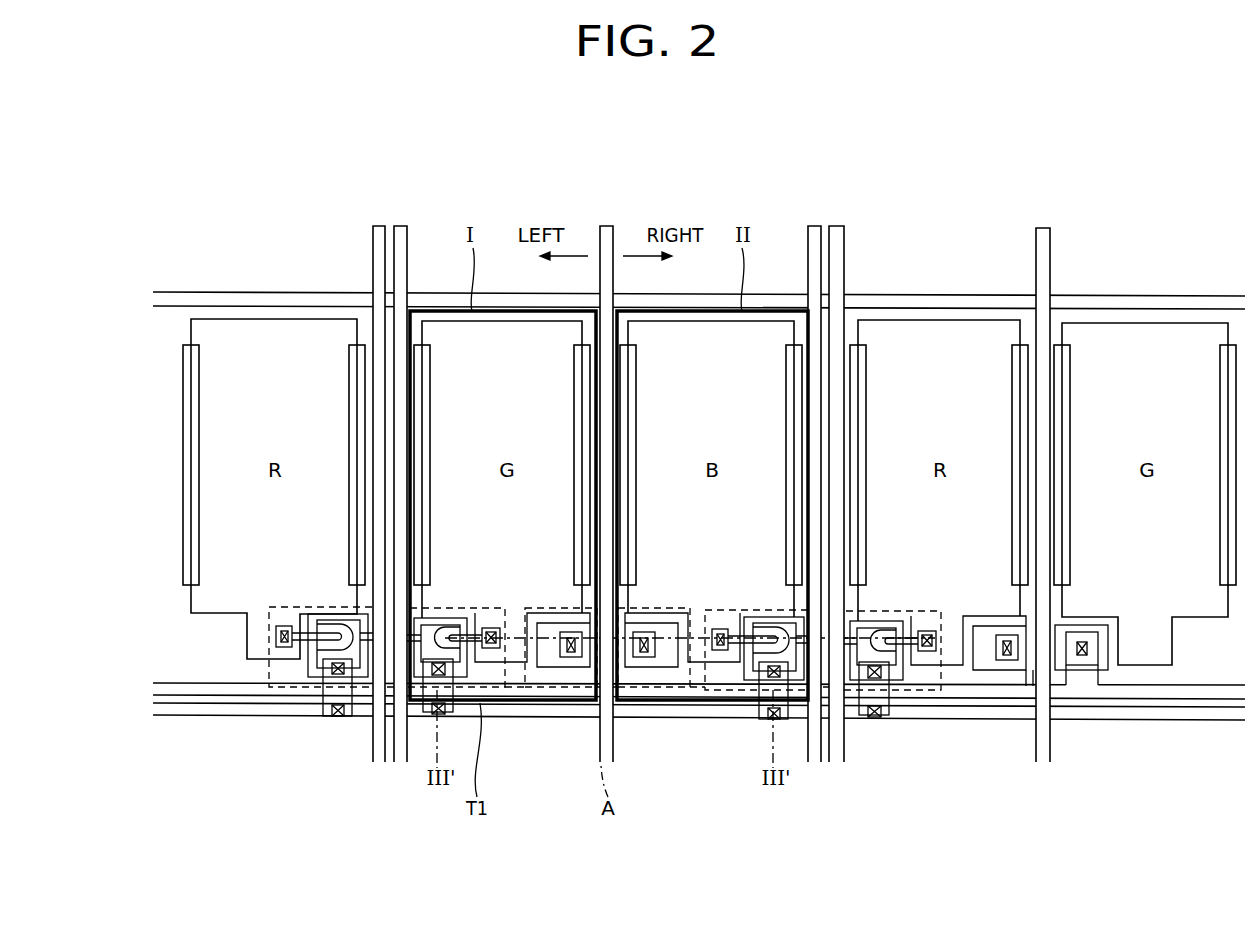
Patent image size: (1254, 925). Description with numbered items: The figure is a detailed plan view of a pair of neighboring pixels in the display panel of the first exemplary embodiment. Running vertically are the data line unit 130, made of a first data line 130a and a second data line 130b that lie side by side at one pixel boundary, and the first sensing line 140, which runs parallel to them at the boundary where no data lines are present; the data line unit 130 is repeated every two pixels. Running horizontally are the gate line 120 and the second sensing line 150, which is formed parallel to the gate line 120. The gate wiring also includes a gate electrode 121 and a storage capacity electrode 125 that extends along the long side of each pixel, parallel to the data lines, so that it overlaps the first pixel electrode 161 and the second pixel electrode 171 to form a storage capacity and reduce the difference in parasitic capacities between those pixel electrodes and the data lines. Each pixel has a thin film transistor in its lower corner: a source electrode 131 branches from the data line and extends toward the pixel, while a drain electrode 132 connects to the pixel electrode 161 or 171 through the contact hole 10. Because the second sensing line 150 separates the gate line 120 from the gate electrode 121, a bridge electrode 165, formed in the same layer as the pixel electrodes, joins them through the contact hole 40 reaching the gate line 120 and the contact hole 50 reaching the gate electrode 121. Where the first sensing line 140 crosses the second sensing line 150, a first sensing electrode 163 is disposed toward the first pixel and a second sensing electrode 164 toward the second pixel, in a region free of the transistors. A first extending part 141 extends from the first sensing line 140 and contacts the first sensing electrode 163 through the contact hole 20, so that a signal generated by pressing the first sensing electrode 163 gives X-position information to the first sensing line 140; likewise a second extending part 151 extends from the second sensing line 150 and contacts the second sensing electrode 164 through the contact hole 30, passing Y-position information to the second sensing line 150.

The contact hole 10 is at (283, 626).
The contact hole 20 is at (569, 630).
The contact hole 30 is at (647, 630).
The contact hole 40 is at (327, 714).
The contact hole 50 is at (340, 716).
The gate line 120 is at (153, 711).
The gate electrode 121 is at (310, 683).
The storage capacity electrode 125 is at (431, 418).
The data line unit 130 is at (608, 438).
The first data line 130a is at (638, 458).
The second data line 130b is at (376, 226).
The source electrode 131 is at (336, 622).
The drain electrode 132 is at (283, 650).
The first sensing line 140 is at (606, 226).
The first extending part 141 is at (580, 658).
The second sensing line 150 is at (153, 683).
The second extending part 151 is at (652, 668).
The first pixel electrode 161 is at (509, 323).
The first sensing electrode 163 is at (547, 668).
The second sensing electrode 164 is at (679, 668).
The bridge electrode 165 is at (352, 708).
The second pixel electrode 171 is at (711, 323).